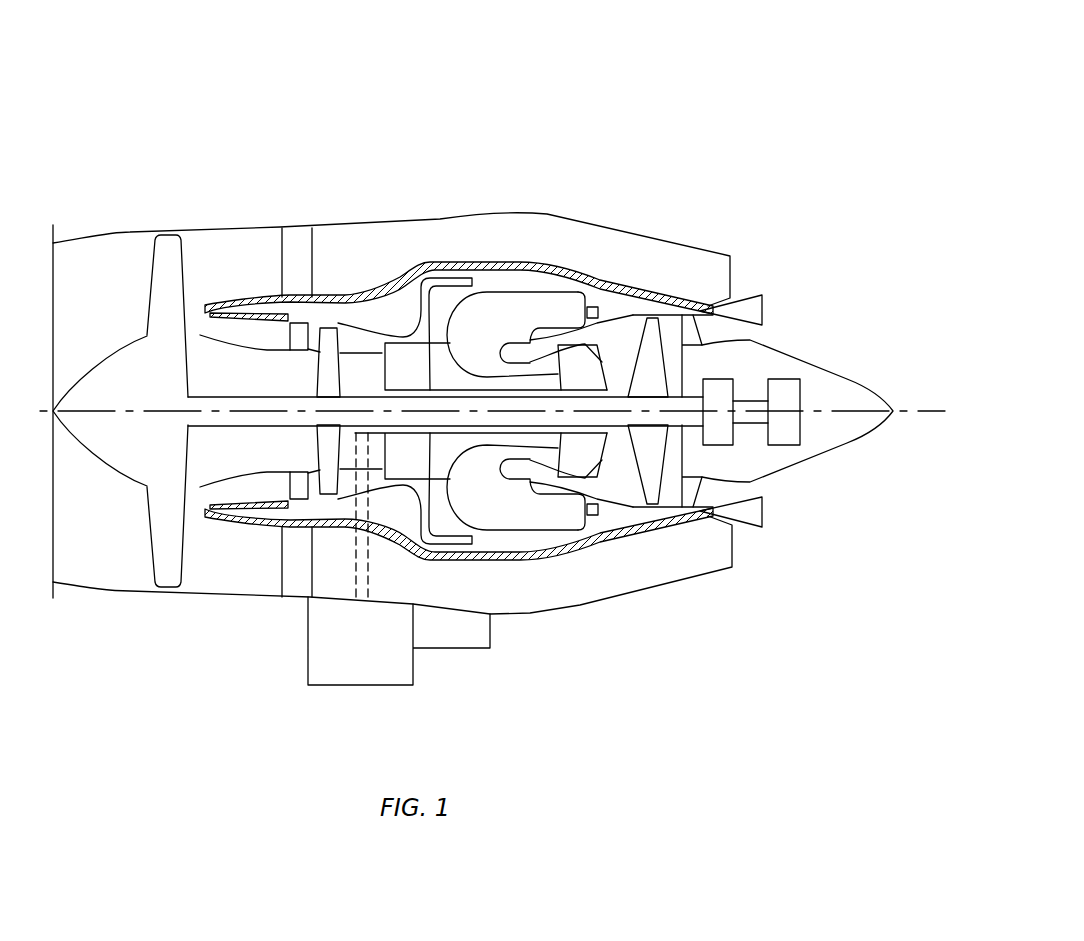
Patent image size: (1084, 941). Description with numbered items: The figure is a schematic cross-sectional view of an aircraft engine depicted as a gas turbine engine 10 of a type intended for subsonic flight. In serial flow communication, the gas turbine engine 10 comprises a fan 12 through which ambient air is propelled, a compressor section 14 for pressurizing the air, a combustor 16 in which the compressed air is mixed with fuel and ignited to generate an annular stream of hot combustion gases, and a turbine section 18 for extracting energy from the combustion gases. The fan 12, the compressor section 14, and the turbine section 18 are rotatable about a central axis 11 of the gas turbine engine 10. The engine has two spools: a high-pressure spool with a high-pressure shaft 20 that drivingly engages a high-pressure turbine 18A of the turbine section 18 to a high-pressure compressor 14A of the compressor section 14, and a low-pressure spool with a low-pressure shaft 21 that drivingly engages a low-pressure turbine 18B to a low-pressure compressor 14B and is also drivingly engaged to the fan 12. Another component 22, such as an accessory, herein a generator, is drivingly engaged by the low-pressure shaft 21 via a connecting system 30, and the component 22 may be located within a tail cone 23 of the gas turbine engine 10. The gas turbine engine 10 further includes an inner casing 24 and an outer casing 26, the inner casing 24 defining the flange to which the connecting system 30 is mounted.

The gas turbine engine 10 is at (655, 121).
The central axis 11 is at (921, 405).
The fan 12 is at (163, 527).
The compressor section 14 is at (353, 337).
The high-pressure compressor 14A is at (337, 500).
The low-pressure compressor 14B is at (328, 455).
The combustor 16 is at (517, 307).
The turbine section 18 is at (600, 463).
The high-pressure turbine 18A is at (583, 367).
The low-pressure turbine 18B is at (647, 343).
The high-pressure shaft 20 is at (453, 435).
The low-pressure shaft 21 is at (238, 397).
The component 22 is at (782, 378).
The tail cone 23 is at (842, 445).
The inner casing 24 is at (617, 350).
The outer casing 26 is at (660, 315).
The connecting system 30 is at (712, 378).